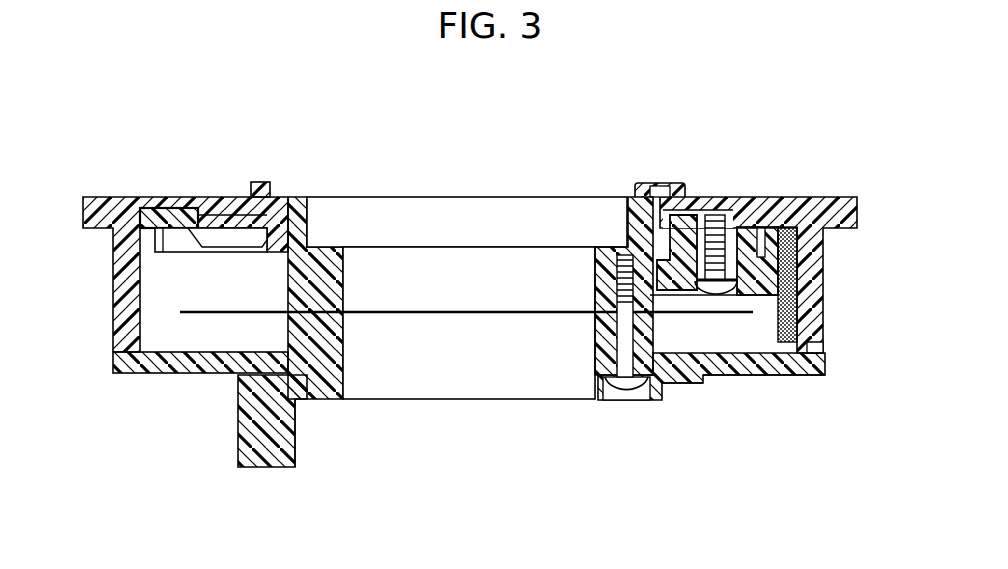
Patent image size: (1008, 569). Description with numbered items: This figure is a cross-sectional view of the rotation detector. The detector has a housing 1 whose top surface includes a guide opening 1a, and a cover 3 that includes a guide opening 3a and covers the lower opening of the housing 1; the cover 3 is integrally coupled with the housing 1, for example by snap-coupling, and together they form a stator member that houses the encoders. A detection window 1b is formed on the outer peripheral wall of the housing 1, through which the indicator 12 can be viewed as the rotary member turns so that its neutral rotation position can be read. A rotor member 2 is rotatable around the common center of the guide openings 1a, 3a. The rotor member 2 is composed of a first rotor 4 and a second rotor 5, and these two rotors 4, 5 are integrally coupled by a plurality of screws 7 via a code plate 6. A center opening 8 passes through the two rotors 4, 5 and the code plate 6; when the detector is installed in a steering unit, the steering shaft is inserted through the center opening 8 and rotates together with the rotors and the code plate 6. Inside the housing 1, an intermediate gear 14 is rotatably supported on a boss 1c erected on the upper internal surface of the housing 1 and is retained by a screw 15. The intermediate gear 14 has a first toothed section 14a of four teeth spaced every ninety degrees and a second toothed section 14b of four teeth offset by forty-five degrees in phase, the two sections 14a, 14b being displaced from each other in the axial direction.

The housing 1 is at (795, 208).
The guide opening 1a is at (233, 197).
The detection window 1b is at (815, 320).
The boss 1c is at (747, 208).
The rotor member 2 is at (241, 362).
The cover 3 is at (132, 365).
The guide opening 3a is at (622, 380).
The first rotor 4 is at (287, 293).
The second rotor 5 is at (240, 437).
The code plate 6 is at (180, 312).
The screws 7 is at (613, 385).
The center opening 8 is at (412, 222).
The indicator 12 is at (790, 373).
The intermediate gear 14 is at (673, 300).
The first toothed section 14a is at (798, 288).
The second toothed section 14b is at (770, 238).
The screw 15 is at (715, 297).